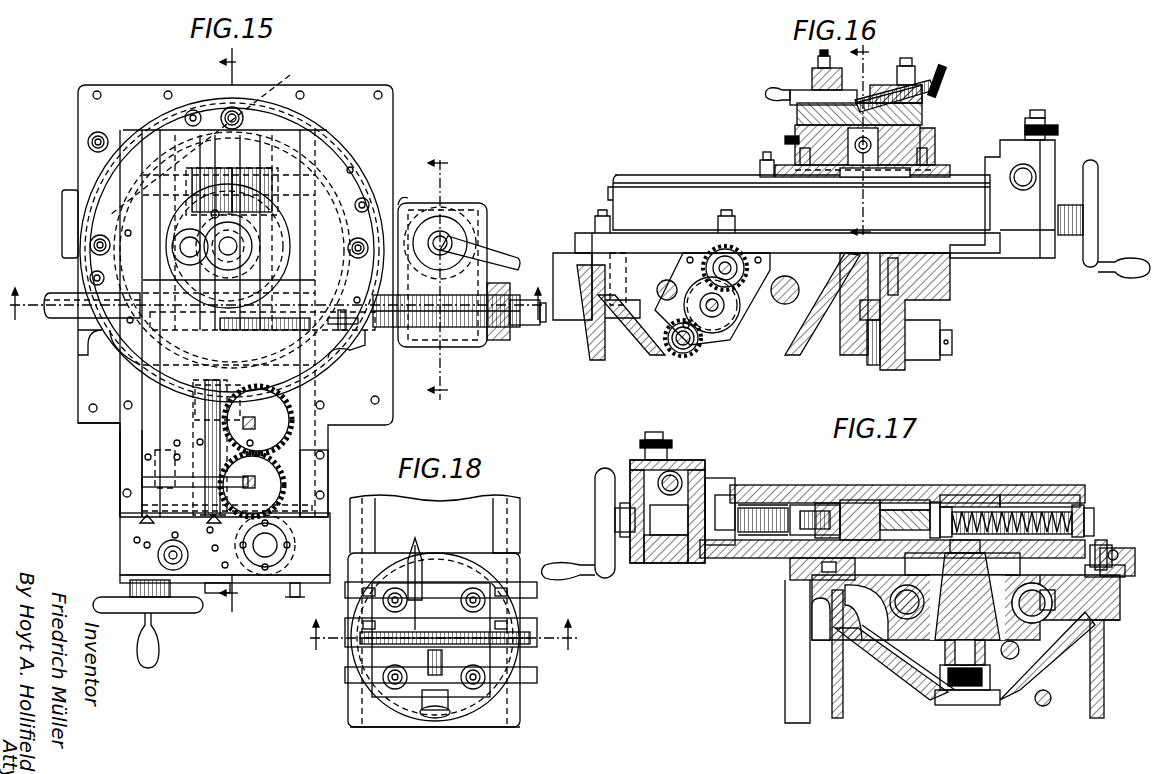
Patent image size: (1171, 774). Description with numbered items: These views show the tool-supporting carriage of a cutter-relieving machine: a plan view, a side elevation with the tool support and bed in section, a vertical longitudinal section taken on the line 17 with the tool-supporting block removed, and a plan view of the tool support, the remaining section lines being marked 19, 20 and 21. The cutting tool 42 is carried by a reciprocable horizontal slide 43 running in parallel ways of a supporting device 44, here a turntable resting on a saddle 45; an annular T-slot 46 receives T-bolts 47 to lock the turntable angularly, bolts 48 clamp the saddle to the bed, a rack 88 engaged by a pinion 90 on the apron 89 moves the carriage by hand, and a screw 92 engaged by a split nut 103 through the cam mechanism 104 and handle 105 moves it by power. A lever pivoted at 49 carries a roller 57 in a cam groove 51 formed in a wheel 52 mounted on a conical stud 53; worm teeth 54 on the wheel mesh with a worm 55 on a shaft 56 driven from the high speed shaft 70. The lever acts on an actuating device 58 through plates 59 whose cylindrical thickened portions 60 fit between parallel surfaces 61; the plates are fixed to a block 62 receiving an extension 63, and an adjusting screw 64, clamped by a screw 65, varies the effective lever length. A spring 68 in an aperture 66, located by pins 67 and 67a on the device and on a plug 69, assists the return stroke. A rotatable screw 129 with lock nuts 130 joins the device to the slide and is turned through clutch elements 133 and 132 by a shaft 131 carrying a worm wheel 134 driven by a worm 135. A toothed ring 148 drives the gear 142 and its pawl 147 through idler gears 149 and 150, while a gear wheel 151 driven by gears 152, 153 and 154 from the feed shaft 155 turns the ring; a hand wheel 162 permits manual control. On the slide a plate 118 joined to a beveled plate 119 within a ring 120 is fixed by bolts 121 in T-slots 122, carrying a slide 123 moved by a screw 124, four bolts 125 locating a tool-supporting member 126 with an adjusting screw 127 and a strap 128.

In FIG. 15, the section line 17— 17 is at (239, 330).
In FIG. 15, the section line 19- 19 is at (276, 311).
In FIG. 16, the section line 20- 20 is at (875, 138).
In FIG. 18, the section line 20- 20 is at (442, 646).
In FIG. 15, the section line 21- 21 is at (450, 276).
In FIG. 16, the cutting tool 42 is at (766, 92).
In FIG. 18, the cutting tool 42 is at (420, 550).
In FIG. 15, the reciprocable horizontal slide 43 is at (150, 430).
In FIG. 16, the reciprocable horizontal slide 43 is at (660, 180).
In FIG. 17, the reciprocable horizontal slide 43 is at (760, 490).
In FIG. 18, the reciprocable horizontal slide 43 is at (480, 522).
In FIG. 15, the supporting device 44 is at (135, 462).
In FIG. 16, the supporting device 44 is at (615, 195).
In FIG. 17, the supporting device 44 is at (752, 555).
In FIG. 15, the saddle 45 is at (90, 383).
In FIG. 16, the saddle 45 is at (570, 250).
In FIG. 17, the saddle 45 is at (785, 600).
In FIG. 17, the annular T-slot 46 is at (830, 565).
In FIG. 17, the T-bolts 47 is at (1108, 548).
In FIG. 16, the bolts 48 is at (615, 310).
In FIG. 15, the pivot 49 is at (150, 340).
In FIG. 15, the cam 51 is at (228, 246).
In FIG. 17, the cam 51 is at (1005, 562).
In FIG. 17, the wheel 52 is at (1000, 583).
In FIG. 15, the conical stud 53 is at (250, 170).
In FIG. 17, the conical stud 53 is at (950, 650).
In FIG. 17, the worm teeth 54 is at (922, 603).
In FIG. 15, the worm 55 is at (232, 212).
In FIG. 17, the worm 55 is at (1035, 612).
In FIG. 15, the shaft 56 is at (400, 200).
In FIG. 16, the shaft 56 is at (663, 288).
In FIG. 17, the shaft 56 is at (1015, 652).
In FIG. 15, the roller 57 is at (210, 170).
In FIG. 17, the actuating device 58 is at (950, 498).
In FIG. 15, the slidable plates 59 is at (330, 300).
In FIG. 17, the slidable plates 59 is at (875, 510).
In FIG. 15, the thickened portions 60 is at (150, 300).
In FIG. 17, the transverse parallel surfaces 61 is at (835, 500).
In FIG. 15, the block 62 is at (235, 437).
In FIG. 17, the extension 63 is at (895, 505).
In FIG. 15, the adjusting screw 64 is at (352, 330).
In FIG. 17, the adjusting screw 64 is at (855, 505).
In FIG. 15, the clamping screw 65 is at (346, 368).
In FIG. 17, the aperture 66 is at (985, 510).
In FIG. 17, the pin 67 is at (950, 510).
In FIG. 17, the pin 67a is at (1078, 505).
In FIG. 17, the spring 68 is at (1015, 508).
In FIG. 17, the plug 69 is at (1092, 515).
In FIG. 17, the high speed shaft 70 is at (1040, 705).
In FIG. 16, the rack 88 is at (900, 310).
In FIG. 16, the apron 89 is at (908, 362).
In FIG. 16, the pinion 90 is at (873, 365).
In FIG. 15, the screw 92 is at (525, 325).
In FIG. 16, the screw 92 is at (800, 290).
In FIG. 17, the screw 92 is at (850, 625).
In FIG. 15, the split nut 103 is at (493, 332).
In FIG. 15, the cam mechanism 104 is at (448, 235).
In FIG. 15, the handle 105 is at (505, 262).
In FIG. 16, the plate 118 is at (935, 160).
In FIG. 18, the plate 118 is at (525, 695).
In FIG. 16, the plate 119 is at (866, 170).
In FIG. 18, the plate 119 is at (415, 698).
In FIG. 16, the ring 120 is at (940, 180).
In FIG. 18, the ring 120 is at (388, 560).
In FIG. 16, the bolts 121 is at (762, 162).
In FIG. 15, the T-slots 122 is at (336, 483).
In FIG. 18, the T-slots 122 is at (370, 497).
In FIG. 16, the slide 123 is at (925, 130).
In FIG. 16, the screw 124 is at (850, 175).
In FIG. 18, the screw 124 is at (530, 638).
In FIG. 16, the bolts 125 is at (838, 62).
In FIG. 18, the bolts 125 is at (383, 680).
In FIG. 16, the tool-supporting member 126 is at (925, 105).
In FIG. 16, the screw 127 is at (935, 76).
In FIG. 16, the strap 128 is at (812, 78).
In FIG. 17, the rotatable screw 129 is at (740, 485).
In FIG. 17, the lock nuts 130 is at (805, 505).
In FIG. 17, the rotatable shaft 131 is at (680, 555).
In FIG. 17, the clutch element 132 is at (717, 545).
In FIG. 17, the clutch element 133 is at (690, 480).
In FIG. 17, the worm wheel 134 is at (655, 550).
In FIG. 17, the worm 135 is at (640, 478).
In FIG. 15, the gear 142 is at (300, 545).
In FIG. 15, the pawl 147 is at (228, 108).
In FIG. 15, the annular toothed ring 148 is at (272, 398).
In FIG. 17, the annular toothed ring 148 is at (1120, 555).
In FIG. 15, the idler gear 149 is at (270, 435).
In FIG. 15, the idler gear 150 is at (270, 470).
In FIG. 16, the gear wheel 151 is at (720, 250).
In FIG. 16, the gear 152 is at (745, 272).
In FIG. 16, the gear 153 is at (740, 318).
In FIG. 16, the gear 154 is at (684, 352).
In FIG. 16, the longitudinal feed shaft 155 is at (680, 350).
In FIG. 17, the longitudinal feed shaft 155 is at (1040, 660).
In FIG. 15, the hand wheel 162 is at (182, 605).
In FIG. 16, the hand wheel 162 is at (1098, 183).
In FIG. 17, the hand wheel 162 is at (595, 480).